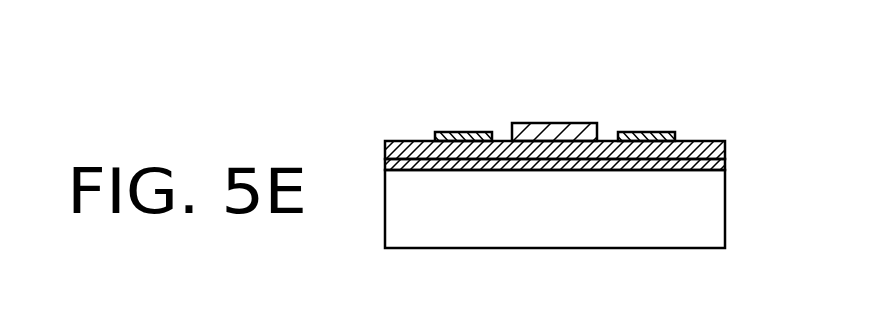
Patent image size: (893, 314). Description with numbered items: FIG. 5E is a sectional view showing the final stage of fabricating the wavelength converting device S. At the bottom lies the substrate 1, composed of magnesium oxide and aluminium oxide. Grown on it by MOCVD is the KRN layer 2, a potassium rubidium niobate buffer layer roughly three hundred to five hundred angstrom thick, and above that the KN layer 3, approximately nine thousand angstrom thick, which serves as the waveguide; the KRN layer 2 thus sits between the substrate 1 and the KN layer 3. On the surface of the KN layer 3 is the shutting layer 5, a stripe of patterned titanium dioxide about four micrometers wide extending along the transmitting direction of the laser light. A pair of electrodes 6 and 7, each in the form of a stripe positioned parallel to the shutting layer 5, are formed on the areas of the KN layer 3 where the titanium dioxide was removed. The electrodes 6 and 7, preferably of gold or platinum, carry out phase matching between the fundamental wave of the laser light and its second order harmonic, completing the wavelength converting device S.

The substrate 1 is at (725, 213).
The KRN layer 2 is at (725, 165).
The KN layer 3 is at (725, 152).
The shutting layer 5 is at (562, 122).
The electrode 6 is at (650, 131).
The electrode 7 is at (466, 131).
The wavelength converting device S is at (706, 119).